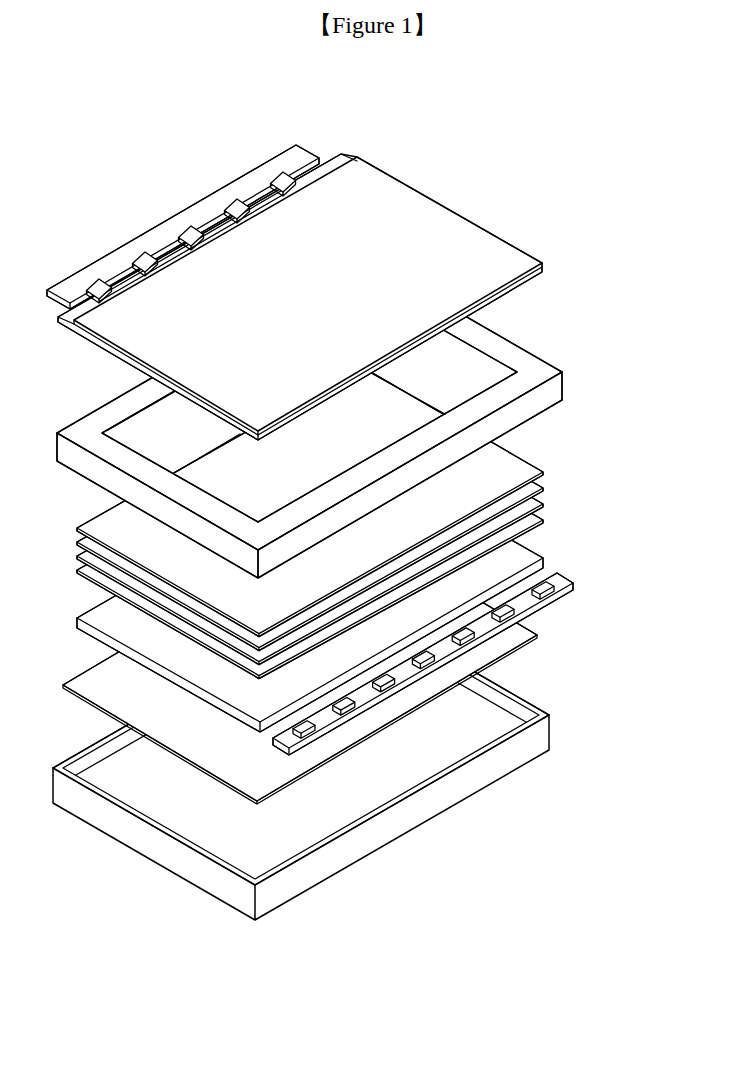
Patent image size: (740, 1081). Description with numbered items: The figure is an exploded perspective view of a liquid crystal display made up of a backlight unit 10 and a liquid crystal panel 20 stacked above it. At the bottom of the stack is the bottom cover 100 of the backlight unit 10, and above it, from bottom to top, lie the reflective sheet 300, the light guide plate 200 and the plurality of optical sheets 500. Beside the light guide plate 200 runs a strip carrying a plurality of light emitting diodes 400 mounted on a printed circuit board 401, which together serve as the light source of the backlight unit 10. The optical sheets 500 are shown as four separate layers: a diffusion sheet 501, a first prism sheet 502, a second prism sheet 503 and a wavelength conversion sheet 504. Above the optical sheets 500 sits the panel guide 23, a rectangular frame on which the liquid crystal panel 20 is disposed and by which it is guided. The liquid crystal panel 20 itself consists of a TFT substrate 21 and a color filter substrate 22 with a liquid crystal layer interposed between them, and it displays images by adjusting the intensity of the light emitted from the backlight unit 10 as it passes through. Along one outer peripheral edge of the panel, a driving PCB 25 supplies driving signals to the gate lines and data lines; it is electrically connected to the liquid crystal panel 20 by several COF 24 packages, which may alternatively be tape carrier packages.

The backlight unit 10 is at (367, 643).
The liquid crystal panel 20 is at (300, 263).
The TFT substrate 21 is at (341, 153).
The color filter substrate 22 is at (341, 112).
The panel guide 23 is at (558, 390).
The COF (chip on film) 24 is at (279, 174).
The driving PCB 25 is at (70, 281).
The bottom cover 100 is at (556, 732).
The light guide plate 200 is at (527, 548).
The reflective sheet 300 is at (526, 632).
The light emitting diodes 400 is at (445, 662).
The printed circuit board 401 is at (562, 573).
The optical sheets 500 is at (360, 522).
The diffusion sheet 501 is at (539, 519).
The first prism sheet 502 is at (539, 503).
The second prism sheet 503 is at (539, 486).
The wavelength conversion sheet 504 is at (539, 470).